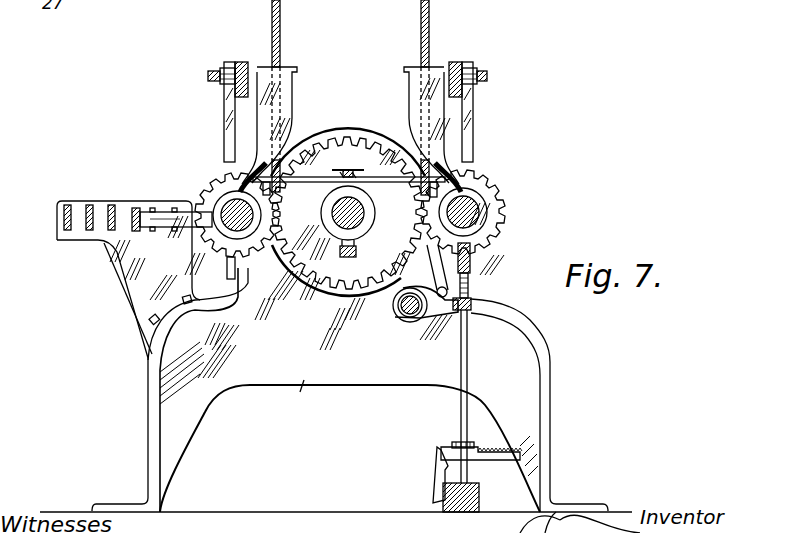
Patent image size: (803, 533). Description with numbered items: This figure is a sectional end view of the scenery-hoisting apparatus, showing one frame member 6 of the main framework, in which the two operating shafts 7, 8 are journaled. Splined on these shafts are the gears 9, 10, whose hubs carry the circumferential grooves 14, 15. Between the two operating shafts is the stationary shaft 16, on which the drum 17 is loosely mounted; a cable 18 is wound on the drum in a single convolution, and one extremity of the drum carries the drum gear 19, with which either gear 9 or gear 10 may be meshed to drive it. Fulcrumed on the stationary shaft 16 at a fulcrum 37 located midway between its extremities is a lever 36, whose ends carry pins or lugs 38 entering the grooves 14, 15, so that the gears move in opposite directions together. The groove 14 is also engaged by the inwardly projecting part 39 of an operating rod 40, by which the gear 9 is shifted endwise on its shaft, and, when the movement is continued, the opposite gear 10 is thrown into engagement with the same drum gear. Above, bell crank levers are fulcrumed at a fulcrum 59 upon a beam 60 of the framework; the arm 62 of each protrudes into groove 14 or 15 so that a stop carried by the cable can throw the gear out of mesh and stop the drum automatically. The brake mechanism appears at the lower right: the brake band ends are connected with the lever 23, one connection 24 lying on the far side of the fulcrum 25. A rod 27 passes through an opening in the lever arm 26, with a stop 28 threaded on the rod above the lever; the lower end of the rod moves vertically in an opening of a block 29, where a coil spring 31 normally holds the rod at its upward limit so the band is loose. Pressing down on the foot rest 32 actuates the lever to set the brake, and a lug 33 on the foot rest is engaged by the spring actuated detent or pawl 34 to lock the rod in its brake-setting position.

The frame member 6 is at (306, 365).
The operating shaft 7 is at (190, 248).
The operating shaft 8 is at (505, 163).
The gear 9 is at (228, 196).
The gear 10 is at (485, 192).
The circumferential groove 14 is at (212, 192).
The circumferential groove 15 is at (497, 197).
The stationary shaft 16 is at (297, 273).
The drum 17 is at (340, 138).
The cable 18 is at (290, 6).
The drum gear 19 is at (334, 132).
The lever 23 is at (414, 322).
The brake band connection 24 is at (477, 267).
The fulcrum 25 is at (398, 325).
The lever arm 26 is at (522, 329).
The rod 27 is at (460, 350).
The stop 28 is at (470, 300).
The block 29 is at (480, 501).
The coil spring 31 is at (136, 7).
The foot rest 32 is at (522, 452).
The lug or projection 33 is at (445, 447).
The spring actuated detent or pawl 34 is at (432, 460).
The lever 36 is at (388, 176).
The fulcrum 37 is at (338, 176).
The pin or lug 38 is at (278, 201).
The inwardly projecting part 39 is at (165, 220).
The operating rod 40 is at (112, 202).
The fulcrum 59 is at (292, 66).
The beam 60 is at (241, 62).
The bell crank lever arm 62 is at (286, 97).